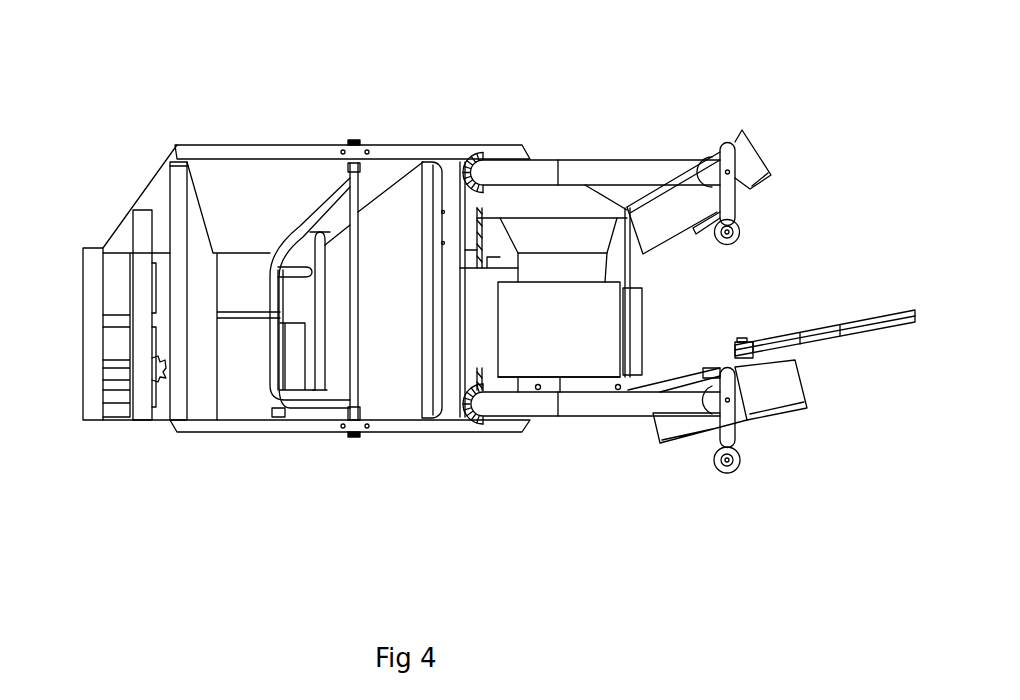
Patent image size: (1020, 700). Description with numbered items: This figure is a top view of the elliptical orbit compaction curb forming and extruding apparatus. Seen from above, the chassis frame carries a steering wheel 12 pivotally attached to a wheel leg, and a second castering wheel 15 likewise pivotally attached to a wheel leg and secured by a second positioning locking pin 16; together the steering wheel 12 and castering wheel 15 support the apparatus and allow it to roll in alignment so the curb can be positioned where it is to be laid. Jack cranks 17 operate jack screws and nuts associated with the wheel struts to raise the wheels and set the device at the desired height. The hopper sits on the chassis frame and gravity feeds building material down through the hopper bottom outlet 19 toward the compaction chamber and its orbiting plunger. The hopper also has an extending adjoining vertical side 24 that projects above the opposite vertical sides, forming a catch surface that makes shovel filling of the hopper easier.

The steering wheel 12 is at (790, 389).
The second castering wheel 15 is at (753, 162).
The second positioning locking pin 16 is at (490, 145).
The jack crank 17 is at (740, 230).
The hopper bottom outlet 19 is at (258, 277).
The extending adjoining vertical side 24 is at (232, 422).